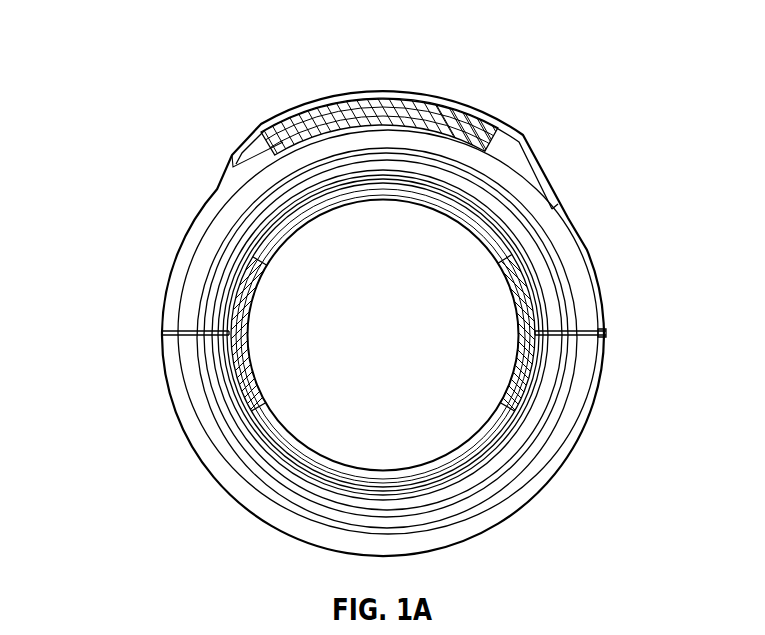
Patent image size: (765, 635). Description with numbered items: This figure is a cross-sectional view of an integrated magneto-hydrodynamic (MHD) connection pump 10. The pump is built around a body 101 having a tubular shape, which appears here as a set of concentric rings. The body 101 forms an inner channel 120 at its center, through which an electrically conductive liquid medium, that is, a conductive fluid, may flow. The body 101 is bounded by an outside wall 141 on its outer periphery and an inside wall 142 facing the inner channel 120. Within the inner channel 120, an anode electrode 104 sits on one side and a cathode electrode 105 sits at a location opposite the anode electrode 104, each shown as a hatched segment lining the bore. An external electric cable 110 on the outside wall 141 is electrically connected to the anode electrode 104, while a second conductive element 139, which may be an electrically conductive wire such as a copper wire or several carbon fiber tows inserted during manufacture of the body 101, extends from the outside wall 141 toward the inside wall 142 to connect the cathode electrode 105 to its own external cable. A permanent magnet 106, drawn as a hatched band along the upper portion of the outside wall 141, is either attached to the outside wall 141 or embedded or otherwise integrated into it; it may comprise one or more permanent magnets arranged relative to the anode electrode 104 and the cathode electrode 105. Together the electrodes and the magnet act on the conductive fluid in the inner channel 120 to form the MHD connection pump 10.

The integrated magneto-hydrodynamic (MHD) connection pump 10 is at (134, 50).
The body 101 is at (476, 517).
The anode electrode 104 is at (531, 288).
The cathode electrode 105 is at (247, 334).
The permanent magnet 106 is at (397, 98).
The external electric cable 110 is at (576, 338).
The inner channel 120 is at (414, 348).
The second conductive element 139 is at (163, 330).
The outside wall 141 is at (577, 430).
The inside wall 142 is at (308, 222).